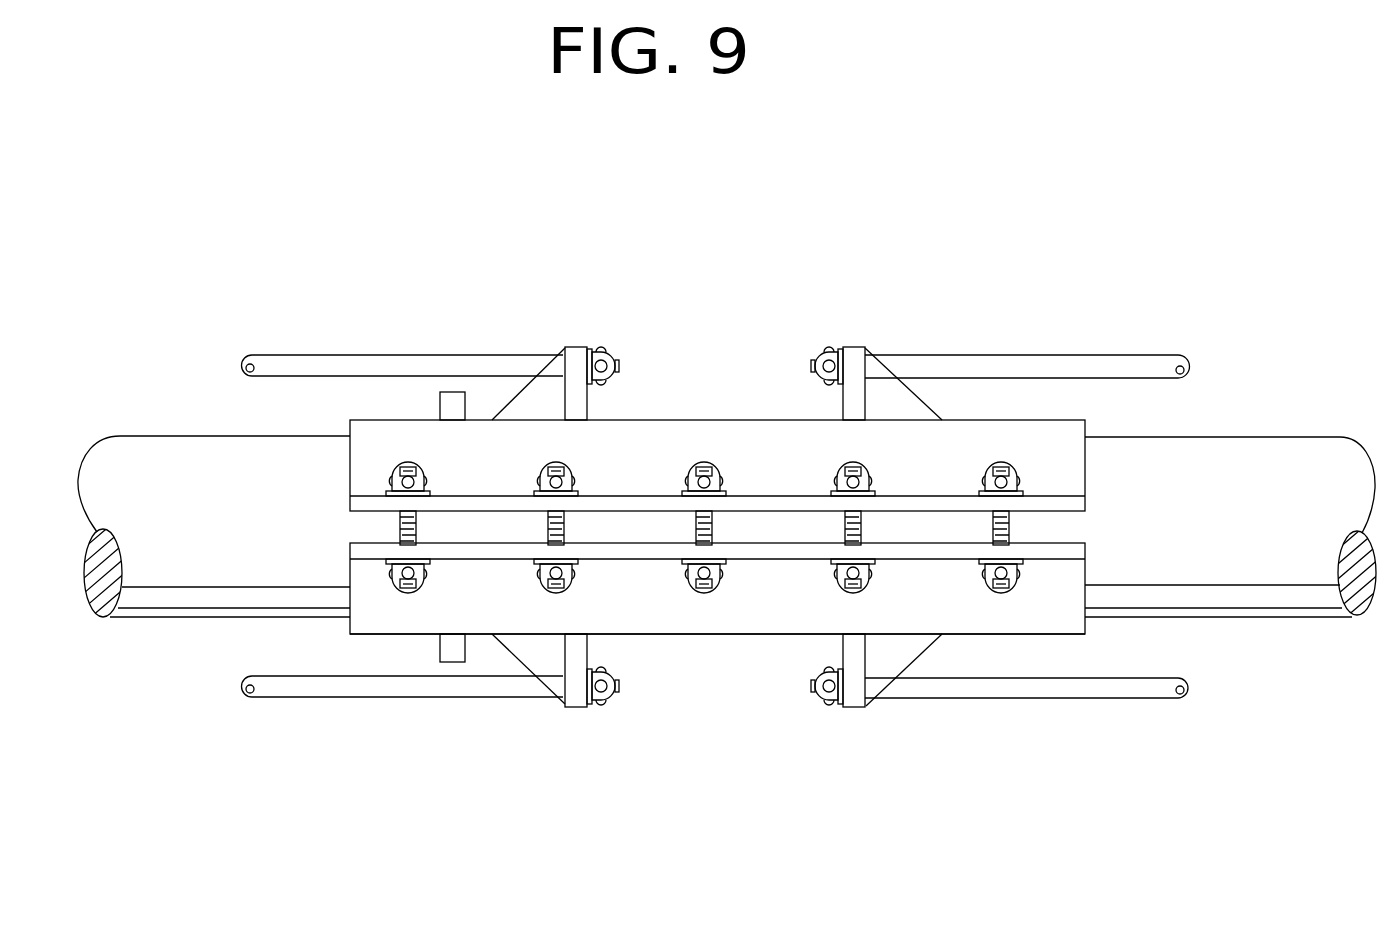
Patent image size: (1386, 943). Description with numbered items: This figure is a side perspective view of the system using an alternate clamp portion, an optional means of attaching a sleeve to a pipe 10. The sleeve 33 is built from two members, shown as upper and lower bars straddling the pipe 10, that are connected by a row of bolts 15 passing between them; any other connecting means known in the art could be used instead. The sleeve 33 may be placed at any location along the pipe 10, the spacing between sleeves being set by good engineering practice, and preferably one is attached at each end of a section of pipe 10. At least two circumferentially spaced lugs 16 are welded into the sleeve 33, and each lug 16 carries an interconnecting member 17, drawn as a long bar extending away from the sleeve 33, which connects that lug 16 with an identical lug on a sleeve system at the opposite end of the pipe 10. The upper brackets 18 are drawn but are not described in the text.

The pipe 10 is at (206, 424).
The bolts 15 is at (679, 468).
The lugs 16 is at (832, 657).
The interconnecting member 17 is at (1010, 349).
The upper bracket 18 is at (605, 345).
The sleeve 33 is at (770, 642).